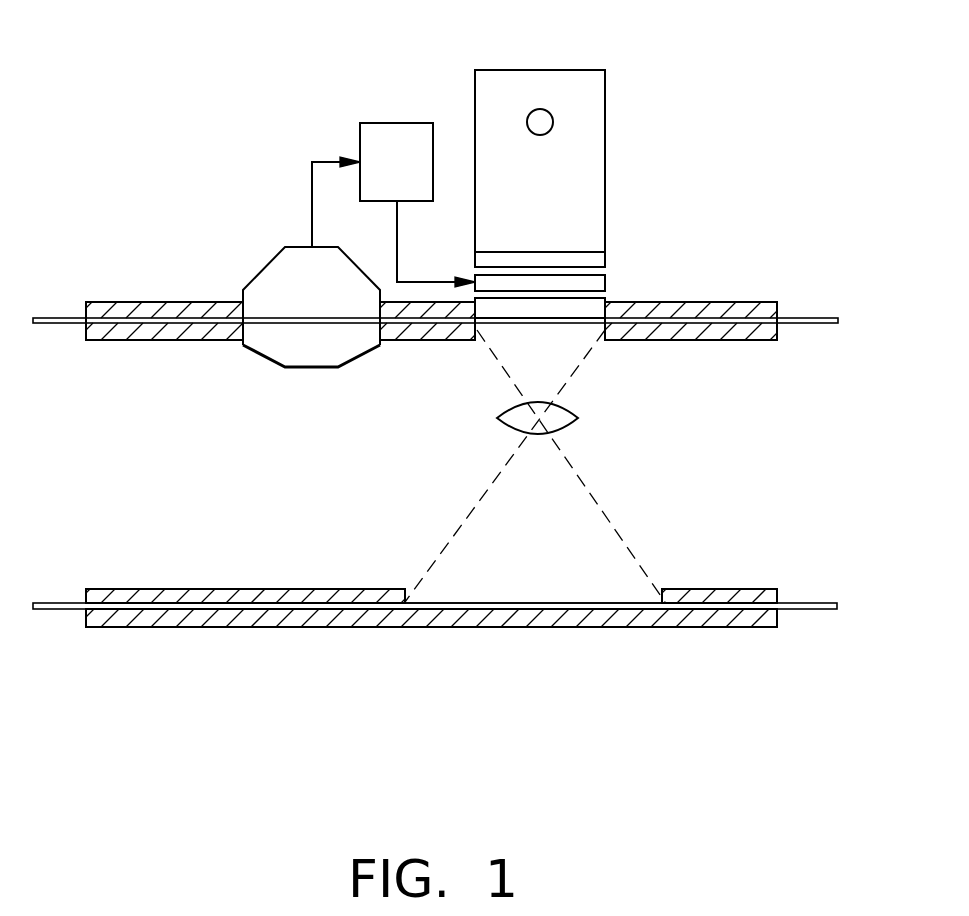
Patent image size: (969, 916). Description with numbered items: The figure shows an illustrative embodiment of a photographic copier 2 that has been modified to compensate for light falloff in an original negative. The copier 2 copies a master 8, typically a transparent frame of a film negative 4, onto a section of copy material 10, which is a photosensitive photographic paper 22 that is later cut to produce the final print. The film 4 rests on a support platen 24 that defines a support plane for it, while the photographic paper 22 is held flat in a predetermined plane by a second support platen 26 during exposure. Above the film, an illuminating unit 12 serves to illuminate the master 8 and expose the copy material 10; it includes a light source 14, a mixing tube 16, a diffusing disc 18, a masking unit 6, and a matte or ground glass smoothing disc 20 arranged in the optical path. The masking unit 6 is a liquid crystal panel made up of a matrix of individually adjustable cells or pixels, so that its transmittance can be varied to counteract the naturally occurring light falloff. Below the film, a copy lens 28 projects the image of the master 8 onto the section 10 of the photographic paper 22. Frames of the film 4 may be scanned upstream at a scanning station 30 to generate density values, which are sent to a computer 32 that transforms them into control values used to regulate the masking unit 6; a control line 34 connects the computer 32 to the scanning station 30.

The photographic copier 2 is at (597, 682).
The film negative 4 is at (63, 323).
The masking unit 6 is at (607, 280).
The master 8 is at (573, 327).
The copy material 10 is at (562, 602).
The illuminating unit 12 is at (607, 107).
The light source 14 is at (540, 108).
The mixing tube 16 is at (583, 82).
The diffusing disc 18 is at (597, 250).
The smoothing disc 20 is at (607, 305).
The photographic paper 22 is at (70, 602).
The support platen 24 is at (128, 302).
The support platen 26 is at (198, 588).
The copy lens 28 is at (578, 420).
The scanning station 30 is at (262, 267).
The computer 32 is at (397, 123).
The control line 34 is at (323, 162).